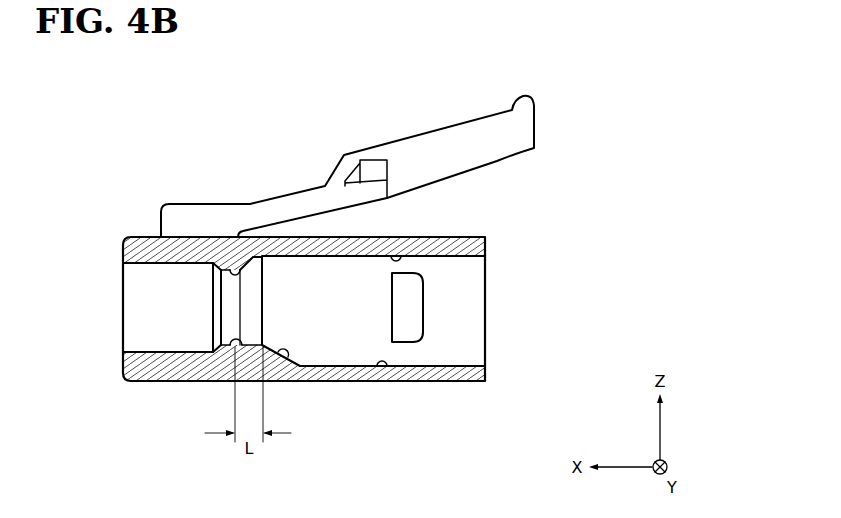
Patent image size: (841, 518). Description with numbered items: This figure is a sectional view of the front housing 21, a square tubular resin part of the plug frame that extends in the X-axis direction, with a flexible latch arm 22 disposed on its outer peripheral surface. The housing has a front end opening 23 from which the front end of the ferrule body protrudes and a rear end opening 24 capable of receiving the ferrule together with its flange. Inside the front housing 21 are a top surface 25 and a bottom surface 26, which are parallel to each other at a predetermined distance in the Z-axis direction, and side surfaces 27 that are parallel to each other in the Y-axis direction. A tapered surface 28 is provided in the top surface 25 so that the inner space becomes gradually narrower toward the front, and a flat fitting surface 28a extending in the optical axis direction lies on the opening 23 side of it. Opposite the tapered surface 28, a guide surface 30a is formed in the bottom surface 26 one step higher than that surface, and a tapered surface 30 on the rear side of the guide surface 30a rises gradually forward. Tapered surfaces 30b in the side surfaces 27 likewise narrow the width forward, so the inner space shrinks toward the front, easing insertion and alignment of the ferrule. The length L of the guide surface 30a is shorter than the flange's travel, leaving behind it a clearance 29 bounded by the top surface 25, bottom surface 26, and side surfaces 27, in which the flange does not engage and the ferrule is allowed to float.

The front housing 21 is at (124, 378).
The flexible latch arm 22 is at (468, 138).
The front end opening 23 is at (123, 310).
The rear end opening 24 is at (486, 312).
The top surface 25 is at (399, 255).
The bottom surface 26 is at (385, 370).
The side surfaces 27 is at (455, 357).
The tapered surface 28 is at (254, 256).
The flat fitting surface 28a is at (233, 268).
The clearance 29 is at (313, 284).
The tapered surface 30 is at (283, 360).
The guide surface 30a is at (236, 352).
The tapered surfaces 30b is at (257, 306).